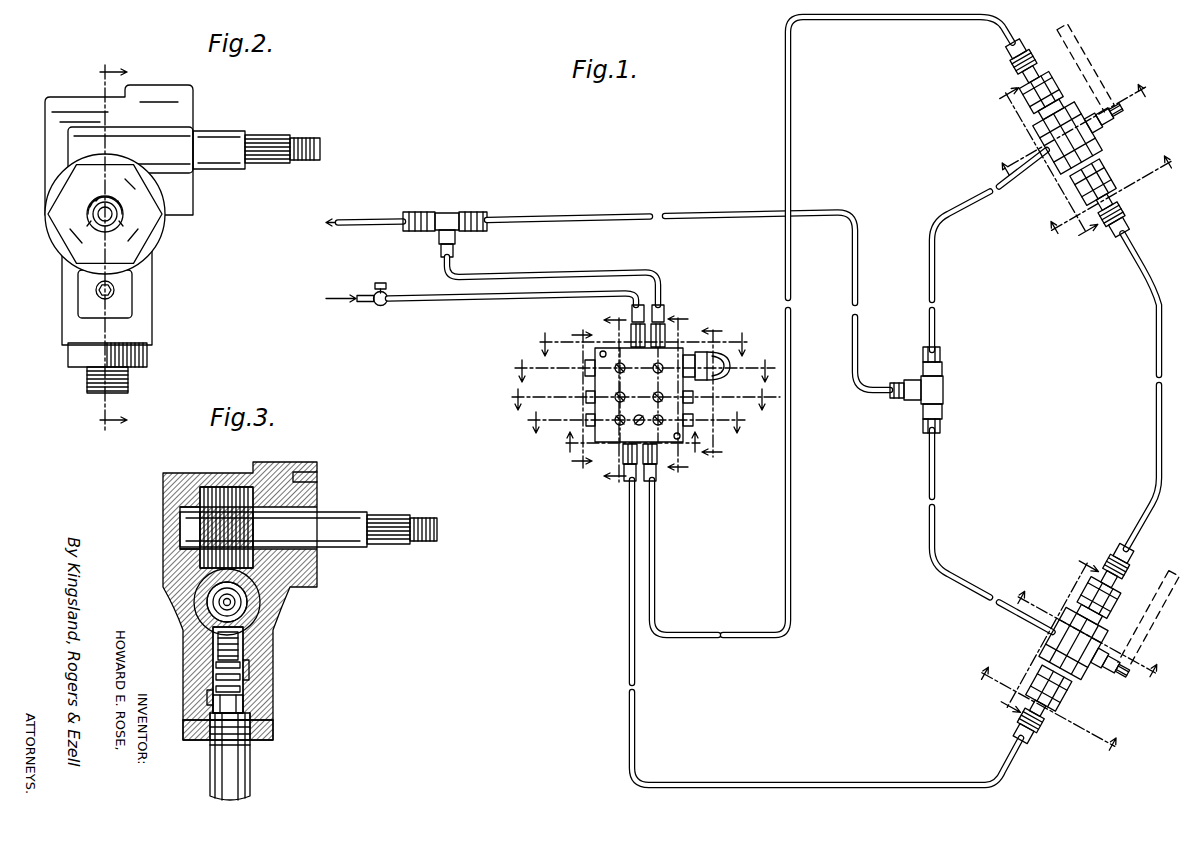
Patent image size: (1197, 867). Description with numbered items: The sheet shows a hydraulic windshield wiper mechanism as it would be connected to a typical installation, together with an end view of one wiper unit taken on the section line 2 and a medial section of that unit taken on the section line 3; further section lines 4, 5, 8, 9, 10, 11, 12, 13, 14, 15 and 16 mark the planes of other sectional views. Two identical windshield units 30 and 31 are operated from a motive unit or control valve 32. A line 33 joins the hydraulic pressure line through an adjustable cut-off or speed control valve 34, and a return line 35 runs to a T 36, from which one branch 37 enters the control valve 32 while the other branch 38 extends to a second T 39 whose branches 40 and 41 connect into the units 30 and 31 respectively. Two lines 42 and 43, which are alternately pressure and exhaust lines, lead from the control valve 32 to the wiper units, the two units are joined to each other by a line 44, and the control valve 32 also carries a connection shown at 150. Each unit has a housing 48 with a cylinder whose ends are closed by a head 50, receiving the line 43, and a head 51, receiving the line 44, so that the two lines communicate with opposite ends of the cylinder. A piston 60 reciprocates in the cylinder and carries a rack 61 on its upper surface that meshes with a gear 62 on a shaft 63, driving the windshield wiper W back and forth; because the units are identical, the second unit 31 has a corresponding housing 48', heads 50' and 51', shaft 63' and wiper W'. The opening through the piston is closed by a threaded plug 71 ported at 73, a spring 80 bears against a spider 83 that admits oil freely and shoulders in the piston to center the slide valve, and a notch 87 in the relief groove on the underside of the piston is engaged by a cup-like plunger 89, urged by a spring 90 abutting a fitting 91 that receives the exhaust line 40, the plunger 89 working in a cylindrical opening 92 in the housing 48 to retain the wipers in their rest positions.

In FIG. 1, the windshield unit 30 is at (1120, 149).
In FIG. 2, the windshield unit 30 is at (241, 109).
In FIG. 3, the windshield unit 30 is at (354, 488).
In FIG. 1, the windshield unit 31 is at (1080, 706).
In FIG. 1, the control valve 32 is at (698, 343).
In FIG. 1, the line 33 is at (421, 301).
In FIG. 1, the speed control valve 34 is at (382, 306).
In FIG. 1, the return line 35 is at (386, 217).
In FIG. 1, the T 36 is at (448, 219).
In FIG. 1, the branch 37 is at (521, 274).
In FIG. 1, the branch 38 is at (596, 217).
In FIG. 1, the T 39 is at (944, 391).
In FIG. 1, the branch 40 is at (936, 292).
In FIG. 2, the branch 40 is at (130, 384).
In FIG. 3, the branch 40 is at (252, 784).
In FIG. 1, the branch 41 is at (936, 484).
In FIG. 1, the line 42 is at (628, 551).
In FIG. 1, the line 43 is at (794, 312).
In FIG. 1, the line 44 is at (1161, 380).
In FIG. 2, the line 44 is at (122, 217).
In FIG. 1, the housing 48 is at (1088, 138).
In FIG. 3, the housing 48 is at (191, 602).
In FIG. 1, the valve body 48' is at (1091, 643).
In FIG. 1, the head 50 is at (1041, 82).
In FIG. 1, the cap 50' is at (1113, 596).
In FIG. 1, the head 51 is at (1108, 181).
In FIG. 2, the head 51 is at (130, 214).
In FIG. 1, the lower body portion 51' is at (1066, 697).
In FIG. 3, the piston 60 is at (196, 588).
In FIG. 3, the rack 61 is at (248, 605).
In FIG. 3, the gear 62 is at (231, 490).
In FIG. 1, the shaft 63 is at (1106, 98).
In FIG. 2, the shaft 63 is at (256, 166).
In FIG. 3, the shaft 63 is at (282, 546).
In FIG. 1, the valve stem 63' is at (1134, 663).
In FIG. 2, the plug 71 is at (116, 223).
In FIG. 2, the port 73 is at (77, 205).
In FIG. 3, the spring 80 is at (268, 620).
In FIG. 3, the spider 83 is at (288, 614).
In FIG. 3, the notch 87 is at (195, 612).
In FIG. 3, the plunger 89 is at (250, 646).
In FIG. 3, the spring 90 is at (245, 691).
In FIG. 2, the fitting 91 is at (150, 356).
In FIG. 3, the fitting 91 is at (274, 741).
In FIG. 3, the cylindrical opening 92 is at (246, 676).
In FIG. 1, the elbow fitting 150 is at (722, 370).
In FIG. 1, the windshield wiper W is at (1092, 68).
In FIG. 1, the handwheel W' is at (1148, 607).
In FIG. 1, the section line 2— 2 is at (1073, 461).
In FIG. 1, the section line 3— 3 is at (1082, 397).
In FIG. 1, the section line 4 is at (1040, 395).
In FIG. 2, the section line 5 is at (103, 247).
In FIG. 1, the section line 8 is at (643, 344).
In FIG. 1, the section line 9 is at (642, 370).
In FIG. 1, the section line 10 is at (641, 398).
In FIG. 1, the section line 11 is at (637, 422).
In FIG. 1, the section line 12 is at (722, 389).
In FIG. 1, the section line 13 is at (575, 393).
In FIG. 1, the section line 14 is at (633, 444).
In FIG. 1, the section line 15 is at (612, 398).
In FIG. 1, the section line 16 is at (689, 388).